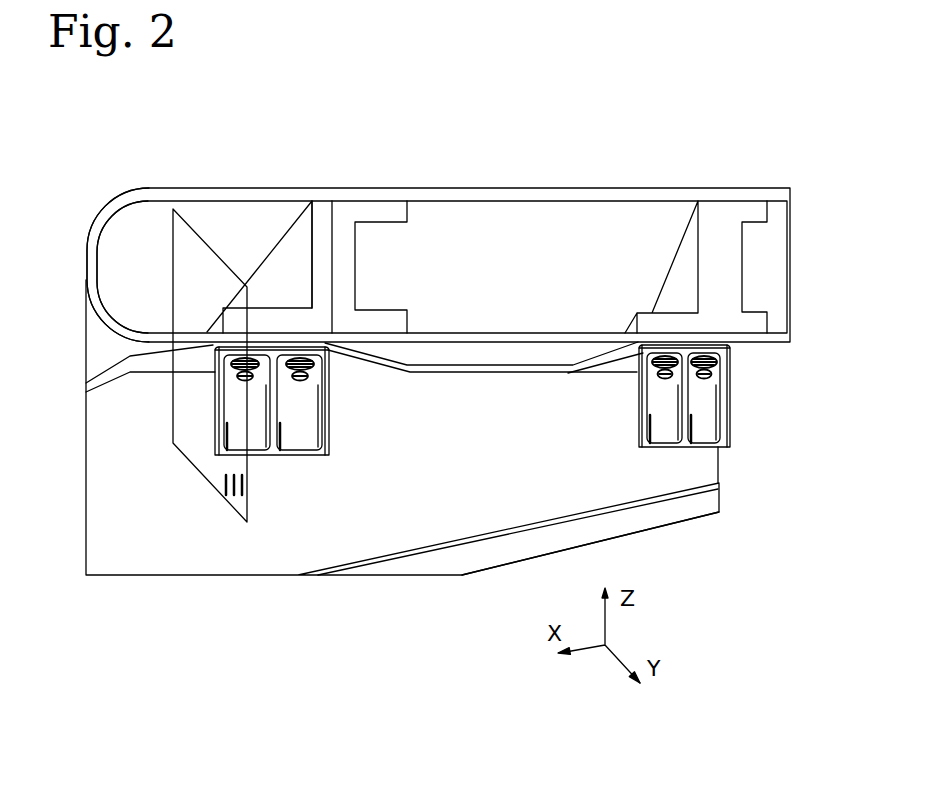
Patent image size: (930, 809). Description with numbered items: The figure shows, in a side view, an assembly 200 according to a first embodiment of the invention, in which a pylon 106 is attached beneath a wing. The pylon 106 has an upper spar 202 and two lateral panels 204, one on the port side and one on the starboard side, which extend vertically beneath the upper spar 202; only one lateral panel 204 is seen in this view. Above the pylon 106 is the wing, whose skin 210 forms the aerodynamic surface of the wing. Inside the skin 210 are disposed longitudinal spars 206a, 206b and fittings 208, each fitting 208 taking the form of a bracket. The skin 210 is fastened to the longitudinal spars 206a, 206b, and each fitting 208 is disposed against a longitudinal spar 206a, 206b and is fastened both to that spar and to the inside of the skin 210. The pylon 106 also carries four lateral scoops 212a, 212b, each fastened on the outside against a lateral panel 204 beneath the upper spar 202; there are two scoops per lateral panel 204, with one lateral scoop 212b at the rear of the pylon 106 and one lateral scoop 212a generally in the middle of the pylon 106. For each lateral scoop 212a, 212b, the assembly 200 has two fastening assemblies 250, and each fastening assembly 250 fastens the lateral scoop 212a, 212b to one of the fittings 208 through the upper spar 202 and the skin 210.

The assembly 200 is at (323, 618).
The upper spar 202 is at (523, 368).
The lateral panel 204 is at (380, 526).
The longitudinal spar 206a is at (392, 207).
The longitudinal spar 206b is at (738, 213).
The fitting 208 is at (326, 230).
The skin 210 is at (97, 242).
The lateral scoop 212a is at (223, 433).
The lateral scoop 212b is at (722, 425).
The fastening assembly 250 is at (653, 362).
The pylon 106 is at (673, 537).